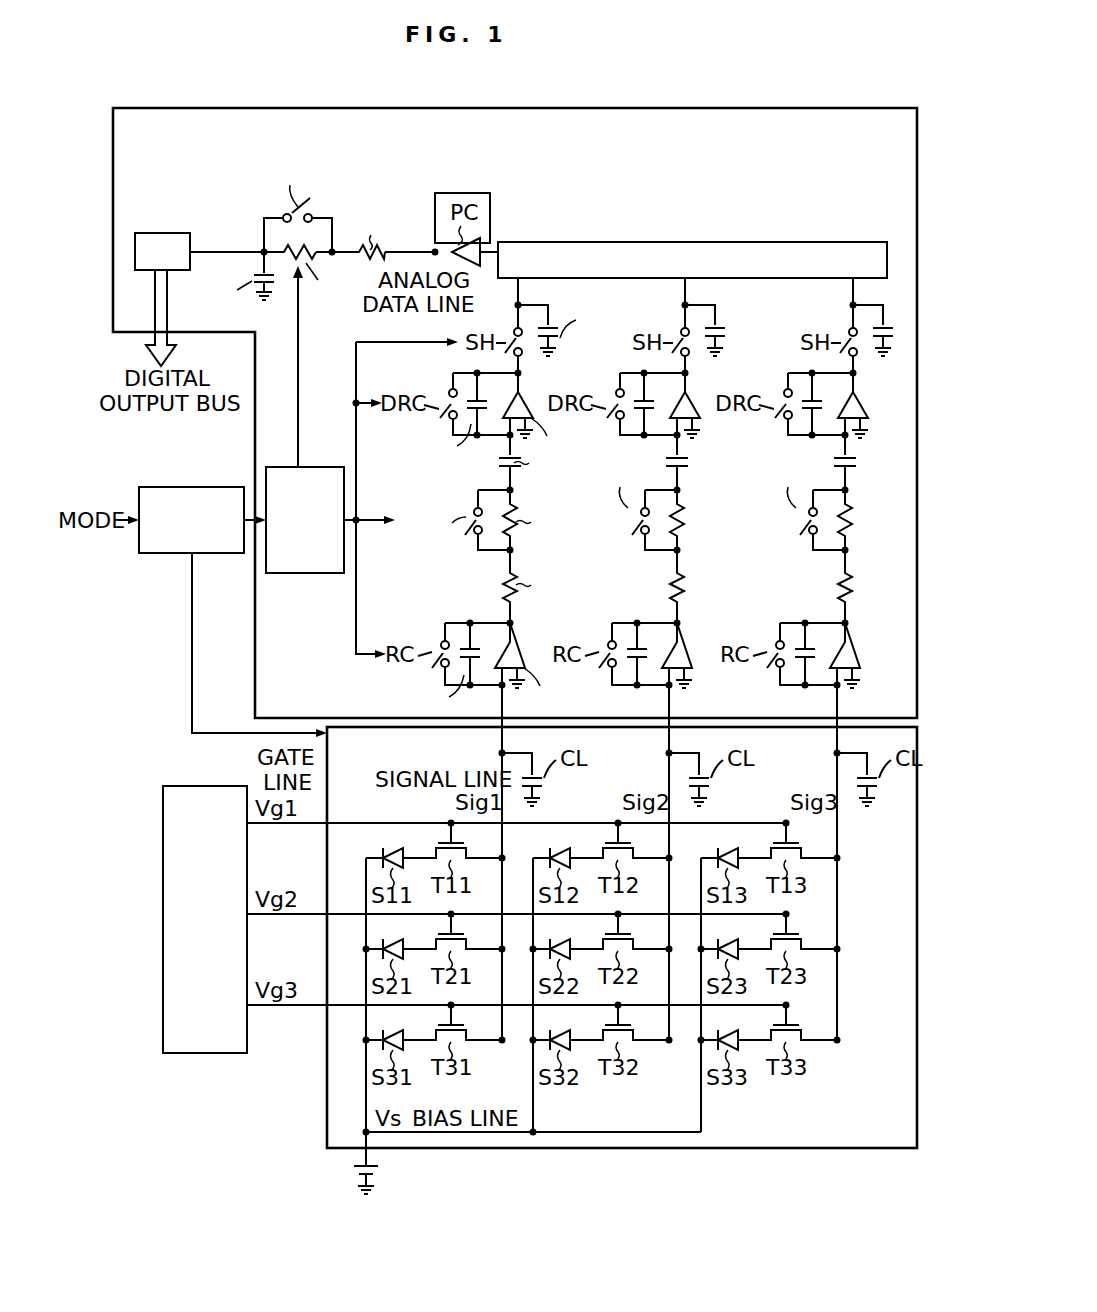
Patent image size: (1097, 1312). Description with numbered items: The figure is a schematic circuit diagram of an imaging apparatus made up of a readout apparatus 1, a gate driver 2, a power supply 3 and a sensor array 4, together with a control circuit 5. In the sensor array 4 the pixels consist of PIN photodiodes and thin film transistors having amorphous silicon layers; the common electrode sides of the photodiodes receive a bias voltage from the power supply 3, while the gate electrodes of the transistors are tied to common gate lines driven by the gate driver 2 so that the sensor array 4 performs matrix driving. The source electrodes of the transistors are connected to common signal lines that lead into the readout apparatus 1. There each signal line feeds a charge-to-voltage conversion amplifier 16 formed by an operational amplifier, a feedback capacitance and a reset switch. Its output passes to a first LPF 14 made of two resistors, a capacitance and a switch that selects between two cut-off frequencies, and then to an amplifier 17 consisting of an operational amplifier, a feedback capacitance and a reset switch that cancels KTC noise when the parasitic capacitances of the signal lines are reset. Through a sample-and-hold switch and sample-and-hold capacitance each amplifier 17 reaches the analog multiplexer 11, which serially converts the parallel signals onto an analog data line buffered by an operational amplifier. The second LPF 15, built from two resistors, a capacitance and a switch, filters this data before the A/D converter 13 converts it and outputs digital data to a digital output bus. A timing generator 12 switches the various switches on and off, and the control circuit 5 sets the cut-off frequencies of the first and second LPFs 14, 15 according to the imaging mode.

The readout apparatus 1 is at (803, 108).
The gate driver 2 is at (205, 1055).
The power supply 3 is at (383, 1173).
The sensor array 4 is at (800, 1150).
The control circuit 5 is at (192, 485).
The analog multiplexer 11 is at (690, 242).
The timing generator 12 is at (318, 468).
The A/D converter 13 is at (163, 234).
The first LPF 14 is at (563, 452).
The second LPF 15 is at (392, 159).
The charge-to-voltage conversion amplifier 16 is at (434, 619).
The amplifier 17 is at (440, 371).